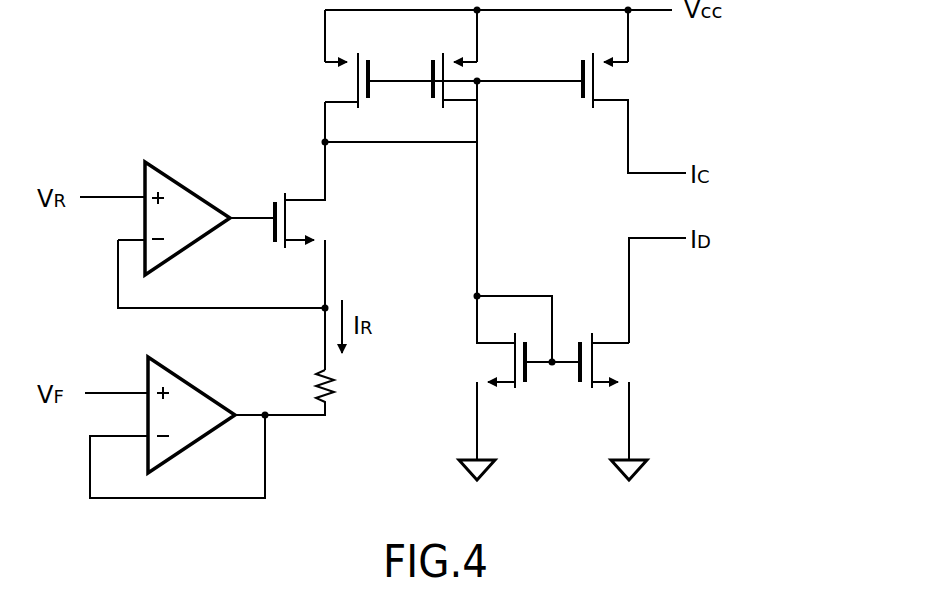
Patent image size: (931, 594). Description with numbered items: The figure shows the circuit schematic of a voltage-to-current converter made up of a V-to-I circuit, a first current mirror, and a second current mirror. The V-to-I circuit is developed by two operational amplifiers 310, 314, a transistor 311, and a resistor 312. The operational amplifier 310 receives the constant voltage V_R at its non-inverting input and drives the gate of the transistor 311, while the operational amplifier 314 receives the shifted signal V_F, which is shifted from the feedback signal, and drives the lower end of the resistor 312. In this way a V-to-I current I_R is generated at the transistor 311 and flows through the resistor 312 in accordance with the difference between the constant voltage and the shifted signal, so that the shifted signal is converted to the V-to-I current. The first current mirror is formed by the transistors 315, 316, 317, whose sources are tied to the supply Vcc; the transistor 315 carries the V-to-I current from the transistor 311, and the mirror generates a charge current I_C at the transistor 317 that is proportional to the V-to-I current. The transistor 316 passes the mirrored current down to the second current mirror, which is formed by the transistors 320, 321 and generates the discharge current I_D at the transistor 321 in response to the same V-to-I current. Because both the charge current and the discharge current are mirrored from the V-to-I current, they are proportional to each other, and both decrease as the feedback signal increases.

The operational amplifier 310 is at (194, 171).
The transistor 311 is at (312, 228).
The resistor 312 is at (340, 385).
The operational amplifier 314 is at (195, 373).
The transistor 315 is at (333, 85).
The transistor 316 is at (475, 88).
The transistor 317 is at (612, 75).
The transistor 320 is at (483, 368).
The transistor 321 is at (624, 371).